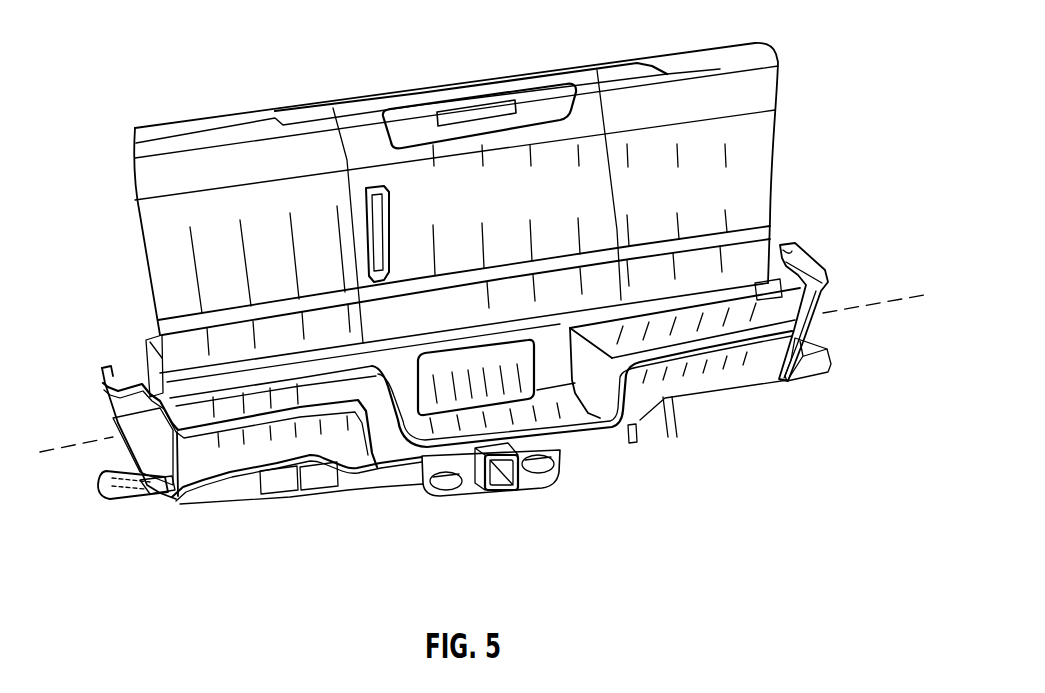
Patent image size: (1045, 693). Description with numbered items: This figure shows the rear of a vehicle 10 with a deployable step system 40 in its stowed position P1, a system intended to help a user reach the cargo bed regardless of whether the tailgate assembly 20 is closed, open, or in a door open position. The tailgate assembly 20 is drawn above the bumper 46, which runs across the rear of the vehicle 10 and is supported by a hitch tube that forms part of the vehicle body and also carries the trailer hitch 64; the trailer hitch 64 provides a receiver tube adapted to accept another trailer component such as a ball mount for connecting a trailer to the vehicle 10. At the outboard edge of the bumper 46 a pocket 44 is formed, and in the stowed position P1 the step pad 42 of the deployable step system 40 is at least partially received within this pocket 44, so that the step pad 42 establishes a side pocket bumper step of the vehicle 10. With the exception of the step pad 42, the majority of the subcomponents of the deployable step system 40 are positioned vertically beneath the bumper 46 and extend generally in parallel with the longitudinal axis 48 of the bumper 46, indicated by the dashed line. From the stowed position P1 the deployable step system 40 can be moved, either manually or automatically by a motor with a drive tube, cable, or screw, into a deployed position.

The vehicle 10 is at (775, 33).
The tailgate assembly 20 is at (745, 152).
The deployable step system 40 is at (169, 555).
The step pad 42 is at (118, 490).
The pocket 44 is at (133, 437).
The bumper 46 is at (210, 445).
The longitudinal axis 48 is at (117, 491).
The trailer hitch 64 is at (509, 489).
The stowed position P1 is at (100, 438).